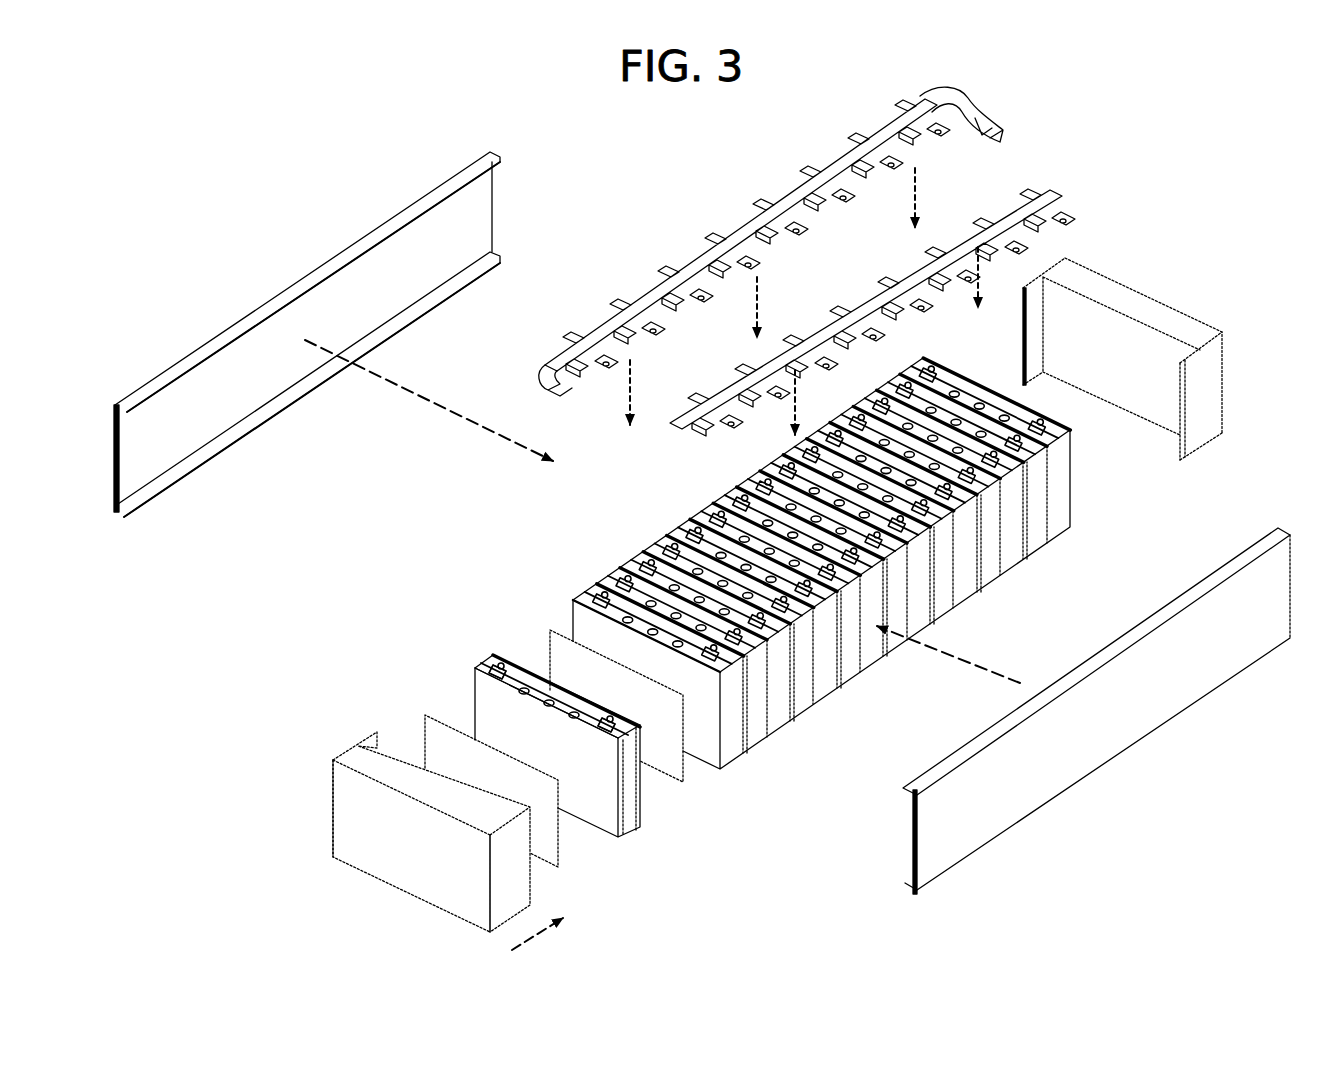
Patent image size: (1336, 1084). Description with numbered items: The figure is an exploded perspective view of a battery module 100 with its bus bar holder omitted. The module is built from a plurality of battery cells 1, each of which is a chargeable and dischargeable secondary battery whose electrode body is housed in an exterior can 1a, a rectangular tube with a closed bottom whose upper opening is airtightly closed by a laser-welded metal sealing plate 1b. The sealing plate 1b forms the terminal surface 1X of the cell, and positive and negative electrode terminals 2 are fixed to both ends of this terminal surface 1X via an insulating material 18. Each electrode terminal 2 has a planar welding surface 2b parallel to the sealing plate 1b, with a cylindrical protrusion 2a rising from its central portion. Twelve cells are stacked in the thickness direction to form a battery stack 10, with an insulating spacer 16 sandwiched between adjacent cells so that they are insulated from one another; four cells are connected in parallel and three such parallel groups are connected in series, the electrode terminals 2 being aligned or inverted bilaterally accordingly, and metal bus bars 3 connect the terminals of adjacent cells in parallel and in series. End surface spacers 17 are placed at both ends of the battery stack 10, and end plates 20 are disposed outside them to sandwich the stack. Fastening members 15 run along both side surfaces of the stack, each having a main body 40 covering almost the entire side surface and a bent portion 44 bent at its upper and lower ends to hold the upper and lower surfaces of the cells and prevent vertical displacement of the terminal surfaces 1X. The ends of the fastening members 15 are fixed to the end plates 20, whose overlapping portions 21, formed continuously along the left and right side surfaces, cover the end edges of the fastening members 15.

The battery module 100 is at (256, 244).
The battery cell 1 is at (466, 647).
The terminal surface 1X is at (563, 682).
The exterior can 1a is at (577, 800).
The sealing plate 1b is at (580, 708).
The electrode terminal 2 is at (547, 584).
The protrusion 2a is at (490, 653).
The welding surface 2b is at (513, 667).
The bus bar 3 is at (728, 212).
The battery stack 10 is at (857, 690).
The fastening member 15 is at (312, 504).
The insulating spacer 16 is at (636, 693).
The end surface spacer 17 is at (438, 745).
The insulating material 18 is at (497, 683).
The end plate 20 is at (1168, 283).
The overlapping portion 21 is at (1032, 348).
The main body 40 is at (178, 430).
The bent portion 44 is at (247, 327).